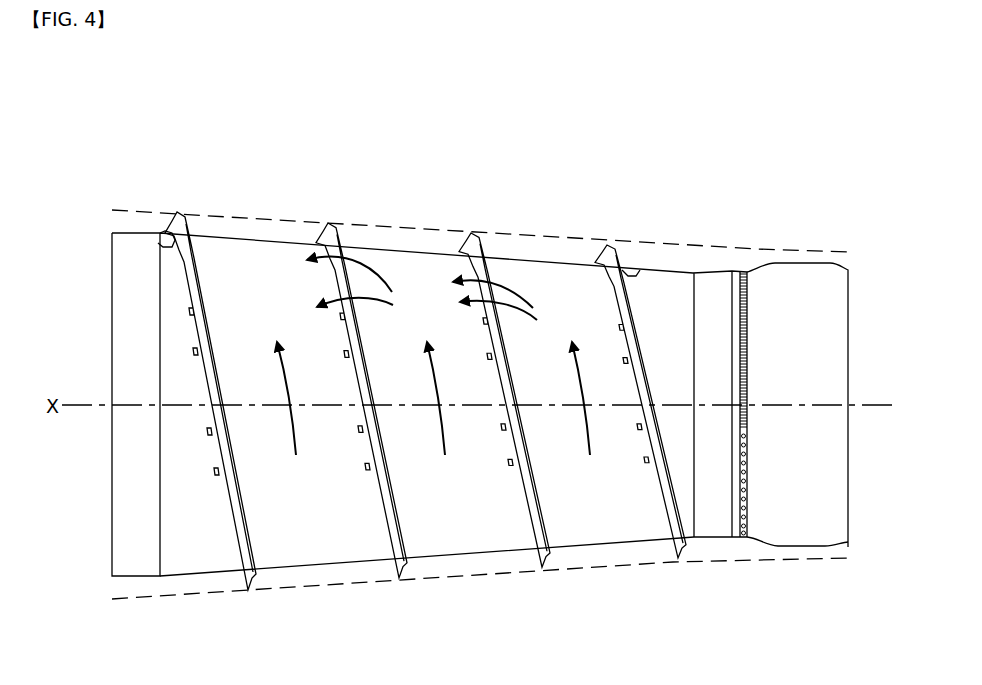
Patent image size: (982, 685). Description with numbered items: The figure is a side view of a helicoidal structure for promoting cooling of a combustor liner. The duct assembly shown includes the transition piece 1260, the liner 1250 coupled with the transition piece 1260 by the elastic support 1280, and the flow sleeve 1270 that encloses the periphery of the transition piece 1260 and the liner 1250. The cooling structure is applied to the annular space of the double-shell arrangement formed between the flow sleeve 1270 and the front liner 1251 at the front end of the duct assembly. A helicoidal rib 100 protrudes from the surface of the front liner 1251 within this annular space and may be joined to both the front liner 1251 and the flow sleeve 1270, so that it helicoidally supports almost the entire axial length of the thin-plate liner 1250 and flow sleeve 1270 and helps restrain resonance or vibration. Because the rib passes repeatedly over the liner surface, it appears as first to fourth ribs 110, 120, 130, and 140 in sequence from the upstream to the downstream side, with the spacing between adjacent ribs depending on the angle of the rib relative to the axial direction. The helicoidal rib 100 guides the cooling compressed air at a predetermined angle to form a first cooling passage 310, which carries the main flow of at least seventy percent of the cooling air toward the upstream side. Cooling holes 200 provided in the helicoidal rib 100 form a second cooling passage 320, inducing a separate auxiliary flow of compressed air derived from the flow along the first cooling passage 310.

The helicoidal rib 100 is at (425, 355).
The first rib 110 is at (185, 212).
The second rib 120 is at (333, 222).
The third rib 130 is at (469, 247).
The fourth rib 140 is at (599, 359).
The cooling holes 200 is at (172, 235).
The liner 1250 is at (553, 248).
The front liner 1251 is at (323, 495).
The transition piece 1260 is at (830, 263).
The flow sleeve 1270 is at (757, 250).
The elastic support 1280 is at (792, 532).
The first cooling passage 310 is at (442, 433).
The second cooling passage 320 is at (515, 312).